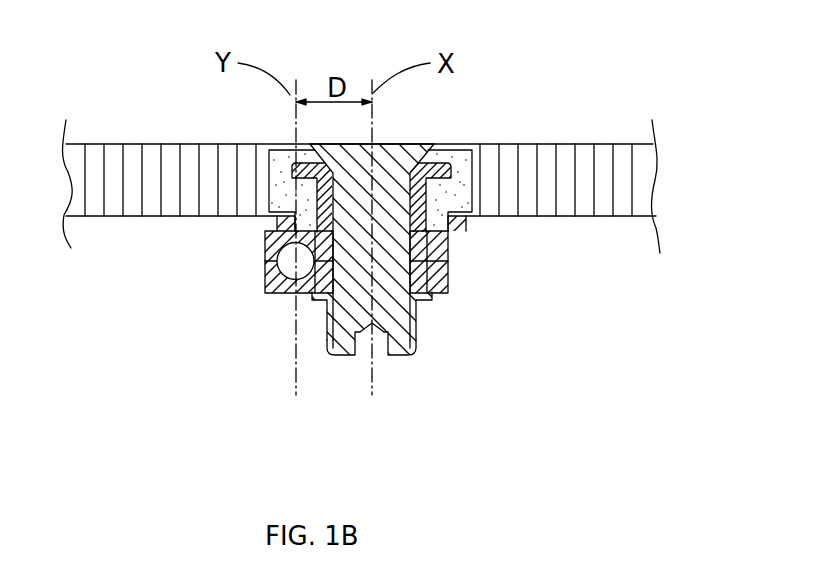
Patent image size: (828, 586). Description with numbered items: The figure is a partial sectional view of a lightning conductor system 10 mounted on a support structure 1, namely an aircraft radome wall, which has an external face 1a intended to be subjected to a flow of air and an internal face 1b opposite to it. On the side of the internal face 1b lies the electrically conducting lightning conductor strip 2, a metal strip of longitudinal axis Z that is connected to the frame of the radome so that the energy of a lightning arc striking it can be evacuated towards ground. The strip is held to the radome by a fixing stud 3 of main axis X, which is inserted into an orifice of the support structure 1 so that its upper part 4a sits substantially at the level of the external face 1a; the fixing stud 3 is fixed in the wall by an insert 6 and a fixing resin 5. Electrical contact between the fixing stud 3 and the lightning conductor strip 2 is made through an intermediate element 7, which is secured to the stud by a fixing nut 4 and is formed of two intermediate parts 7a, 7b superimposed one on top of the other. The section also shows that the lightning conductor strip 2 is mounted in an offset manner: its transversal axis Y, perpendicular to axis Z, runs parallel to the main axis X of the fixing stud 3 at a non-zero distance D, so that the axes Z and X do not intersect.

The lightning conductor system 10 is at (165, 112).
The support structure 1 is at (600, 163).
The external face 1a is at (525, 143).
The internal face 1b is at (583, 217).
The lightning conductor strip 2 is at (280, 253).
The fixing stud 3 is at (340, 357).
The fixing nut 4 is at (415, 328).
The upper part 4a is at (405, 143).
The fixing resin 5 is at (471, 148).
The insert 6 is at (292, 163).
The intermediate element 7 is at (433, 280).
The first intermediate part 7a is at (448, 242).
The second intermediate part 7b is at (265, 283).